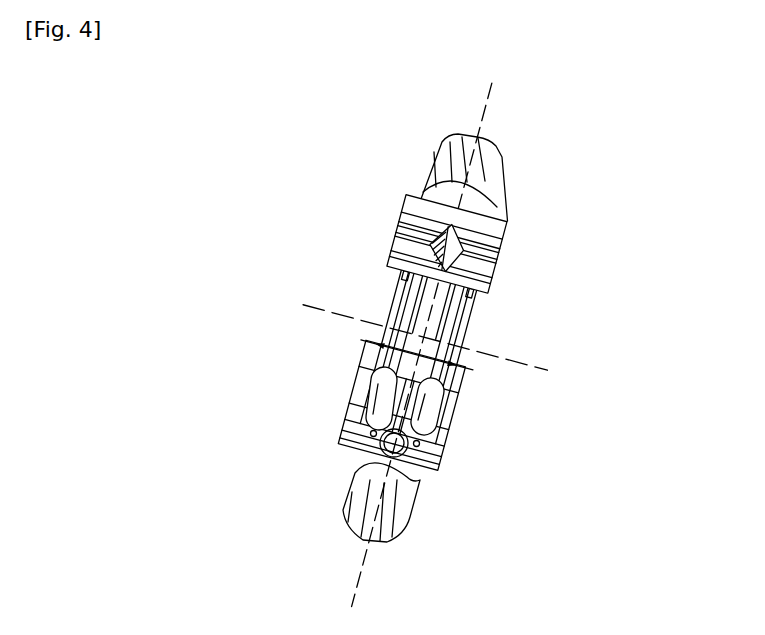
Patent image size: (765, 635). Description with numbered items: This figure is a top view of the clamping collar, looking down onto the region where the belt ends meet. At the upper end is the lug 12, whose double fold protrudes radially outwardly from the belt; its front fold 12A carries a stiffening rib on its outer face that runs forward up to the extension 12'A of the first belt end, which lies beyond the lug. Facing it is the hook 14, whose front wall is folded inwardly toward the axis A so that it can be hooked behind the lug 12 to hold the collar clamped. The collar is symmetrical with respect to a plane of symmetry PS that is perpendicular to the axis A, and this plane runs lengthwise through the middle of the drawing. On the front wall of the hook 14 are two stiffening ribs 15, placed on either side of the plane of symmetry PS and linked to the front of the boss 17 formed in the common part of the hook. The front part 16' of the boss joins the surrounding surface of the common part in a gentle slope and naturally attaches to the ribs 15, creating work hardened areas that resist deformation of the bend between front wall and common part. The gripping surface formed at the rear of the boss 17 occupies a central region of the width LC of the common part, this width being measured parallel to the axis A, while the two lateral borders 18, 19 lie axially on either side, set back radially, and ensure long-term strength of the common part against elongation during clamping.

The lug 12 is at (516, 289).
The front fold 12A is at (430, 251).
The extension 12'A is at (492, 254).
The hook 14 is at (507, 419).
The stiffening ribs 15 is at (372, 384).
The front part of the boss 16' is at (351, 467).
The boss 17 is at (413, 490).
The lateral border 18 is at (438, 450).
The lateral border 19 is at (352, 428).
The plane of symmetry PS is at (489, 102).
The axis A is at (317, 303).
The width of the common part of the hook LC is at (420, 355).